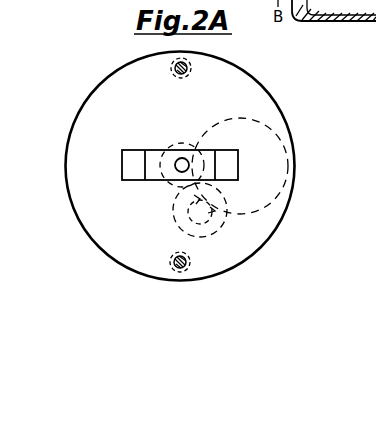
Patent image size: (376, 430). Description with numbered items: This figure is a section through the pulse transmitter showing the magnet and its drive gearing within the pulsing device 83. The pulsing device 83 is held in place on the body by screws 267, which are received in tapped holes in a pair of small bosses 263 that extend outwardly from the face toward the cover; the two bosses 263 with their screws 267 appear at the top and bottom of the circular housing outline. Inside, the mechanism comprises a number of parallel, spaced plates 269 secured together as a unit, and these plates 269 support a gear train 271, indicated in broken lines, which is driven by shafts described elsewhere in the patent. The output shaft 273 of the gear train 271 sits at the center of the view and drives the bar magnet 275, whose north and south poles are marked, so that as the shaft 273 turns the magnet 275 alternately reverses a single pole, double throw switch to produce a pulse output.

In FIG. 2A, the pulsing device 83 is at (272, 89).
In FIG. 2, the pulsing device 83 is at (334, 20).
In FIG. 2A, the small bosses 263 is at (198, 63).
In FIG. 2A, the screws 267 is at (175, 66).
In FIG. 2, the screws 267 is at (356, 0).
In FIG. 2A, the parallel spaced plates 269 is at (294, 188).
In FIG. 2A, the gear train 271 is at (290, 137).
In FIG. 2A, the output shaft 273 is at (182, 158).
In FIG. 2A, the magnet 275 is at (132, 150).